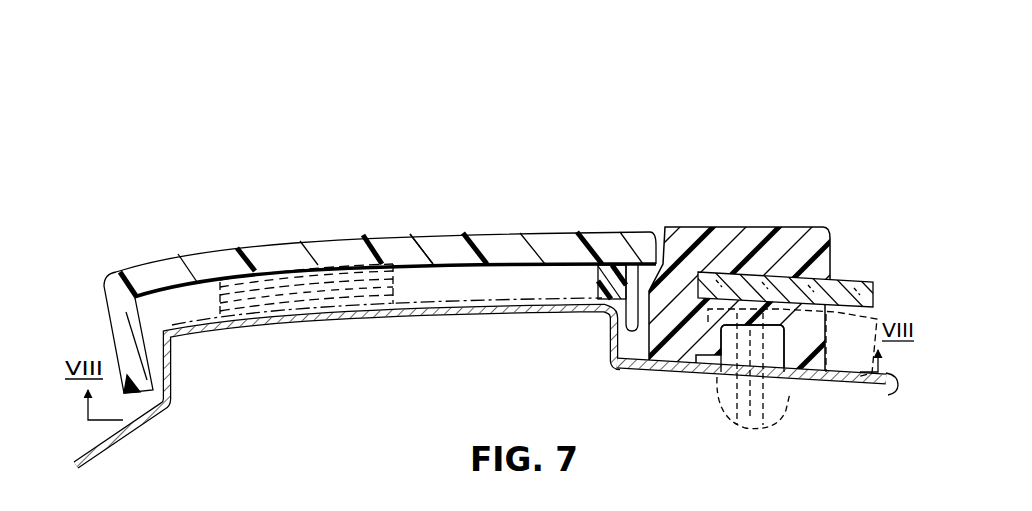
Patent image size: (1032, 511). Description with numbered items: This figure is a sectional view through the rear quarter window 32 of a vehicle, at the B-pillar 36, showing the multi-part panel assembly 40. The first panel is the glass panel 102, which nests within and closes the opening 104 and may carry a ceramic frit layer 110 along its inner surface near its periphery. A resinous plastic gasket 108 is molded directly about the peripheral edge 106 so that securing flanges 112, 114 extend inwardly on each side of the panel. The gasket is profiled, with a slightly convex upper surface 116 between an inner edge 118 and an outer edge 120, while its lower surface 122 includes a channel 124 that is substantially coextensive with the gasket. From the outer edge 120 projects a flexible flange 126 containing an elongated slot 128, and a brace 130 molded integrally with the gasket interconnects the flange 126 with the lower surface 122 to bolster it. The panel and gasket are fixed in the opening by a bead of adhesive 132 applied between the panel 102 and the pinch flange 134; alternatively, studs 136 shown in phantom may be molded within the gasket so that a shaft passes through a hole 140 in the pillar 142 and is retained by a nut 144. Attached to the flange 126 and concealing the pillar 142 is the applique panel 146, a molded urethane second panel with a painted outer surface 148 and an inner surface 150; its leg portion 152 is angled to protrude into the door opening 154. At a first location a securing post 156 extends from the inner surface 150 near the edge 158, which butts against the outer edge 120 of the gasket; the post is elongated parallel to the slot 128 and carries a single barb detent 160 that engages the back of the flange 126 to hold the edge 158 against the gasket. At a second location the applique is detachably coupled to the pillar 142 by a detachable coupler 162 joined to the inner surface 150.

The rear quarter window 32 is at (876, 191).
The B-pillar 36 is at (157, 250).
The multi-part panel assembly 40 is at (255, 193).
The glass panel 102 is at (857, 277).
The opening 104 is at (858, 392).
The peripheral edge 106 is at (742, 272).
The gasket 108 is at (689, 222).
The ceramic frit layer 110 is at (872, 310).
The securing flange 112 is at (820, 238).
The securing flange 114 is at (836, 240).
The upper surface 116 is at (783, 228).
The inner edge 118 is at (830, 241).
The outer edge 120 is at (650, 238).
The lower surface 122 is at (657, 345).
The channel 124 is at (727, 392).
The flange 126 is at (600, 290).
The slot 128 is at (608, 318).
The brace 130 is at (620, 377).
The bead of adhesive 132 is at (821, 330).
The pinch flange 134 is at (857, 395).
The stud 136 is at (752, 422).
The hole 140 is at (786, 397).
The pillar 142 is at (658, 382).
The nut 144 is at (727, 430).
The applique panel 146 is at (380, 233).
The outer surface 148 is at (418, 234).
The inner surface 150 is at (502, 267).
The leg portion 152 is at (109, 306).
The door opening 154 is at (98, 341).
The securing post 156 is at (596, 312).
The edge 158 is at (627, 240).
The single barb detent 160 is at (621, 366).
The detachable coupler 162 is at (253, 333).